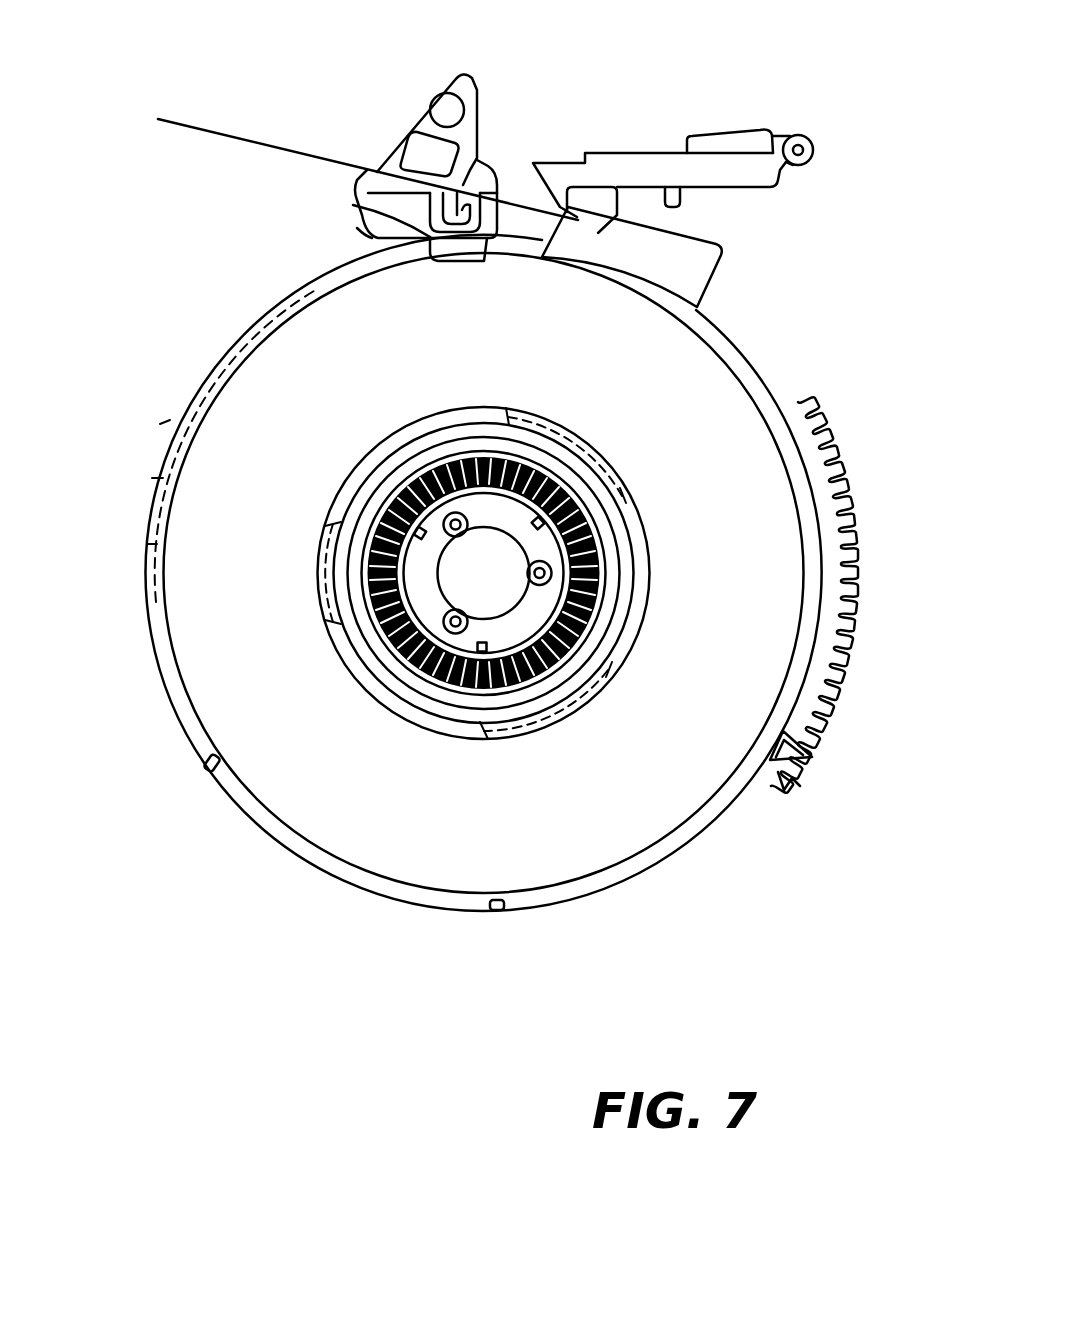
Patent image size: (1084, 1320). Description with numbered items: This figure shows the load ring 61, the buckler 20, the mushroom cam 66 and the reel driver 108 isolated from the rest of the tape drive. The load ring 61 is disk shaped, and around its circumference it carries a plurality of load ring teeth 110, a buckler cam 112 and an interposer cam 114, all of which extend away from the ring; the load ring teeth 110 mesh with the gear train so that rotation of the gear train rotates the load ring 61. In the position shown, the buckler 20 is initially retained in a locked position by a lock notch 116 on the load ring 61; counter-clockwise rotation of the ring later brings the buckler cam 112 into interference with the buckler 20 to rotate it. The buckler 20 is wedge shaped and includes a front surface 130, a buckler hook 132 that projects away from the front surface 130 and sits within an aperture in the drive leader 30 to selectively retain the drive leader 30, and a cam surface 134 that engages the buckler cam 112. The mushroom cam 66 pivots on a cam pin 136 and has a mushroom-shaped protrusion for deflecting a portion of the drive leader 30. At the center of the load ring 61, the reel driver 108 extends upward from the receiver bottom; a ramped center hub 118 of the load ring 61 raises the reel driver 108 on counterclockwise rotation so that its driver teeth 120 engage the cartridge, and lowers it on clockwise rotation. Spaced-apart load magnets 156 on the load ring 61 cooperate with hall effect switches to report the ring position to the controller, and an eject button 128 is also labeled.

The buckler 20 is at (452, 103).
The drive leader 30 is at (292, 152).
The load ring 61 is at (643, 831).
The mushroom cam 66 is at (650, 155).
The reel driver 108 is at (620, 562).
The load ring teeth 110 is at (855, 627).
The buckler cam 112 is at (714, 254).
The interposer cam 114 is at (815, 757).
The lock notch 116 is at (373, 253).
The center hub 118 is at (600, 452).
The driver teeth 120 is at (605, 603).
The eject button 128 is at (447, 103).
The front surface 130 is at (383, 168).
The buckler hook 132 is at (373, 200).
The cam surface 134 is at (378, 240).
The cam pin 136 is at (815, 148).
The load magnets 156 is at (205, 770).